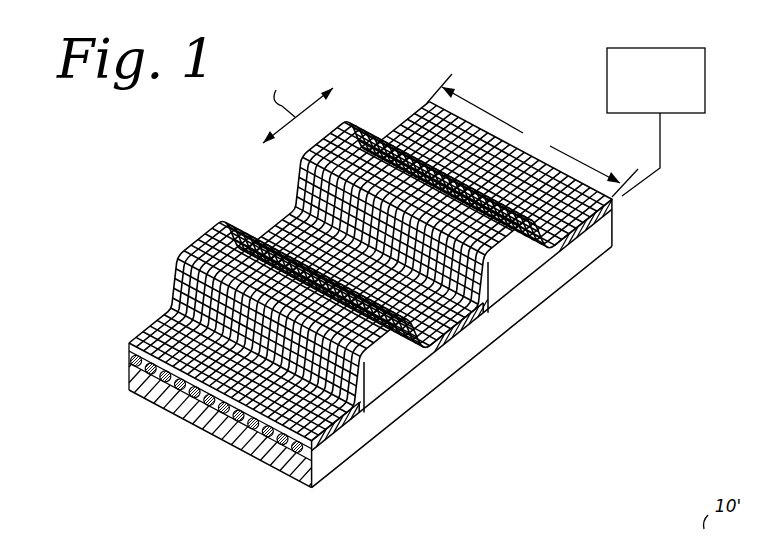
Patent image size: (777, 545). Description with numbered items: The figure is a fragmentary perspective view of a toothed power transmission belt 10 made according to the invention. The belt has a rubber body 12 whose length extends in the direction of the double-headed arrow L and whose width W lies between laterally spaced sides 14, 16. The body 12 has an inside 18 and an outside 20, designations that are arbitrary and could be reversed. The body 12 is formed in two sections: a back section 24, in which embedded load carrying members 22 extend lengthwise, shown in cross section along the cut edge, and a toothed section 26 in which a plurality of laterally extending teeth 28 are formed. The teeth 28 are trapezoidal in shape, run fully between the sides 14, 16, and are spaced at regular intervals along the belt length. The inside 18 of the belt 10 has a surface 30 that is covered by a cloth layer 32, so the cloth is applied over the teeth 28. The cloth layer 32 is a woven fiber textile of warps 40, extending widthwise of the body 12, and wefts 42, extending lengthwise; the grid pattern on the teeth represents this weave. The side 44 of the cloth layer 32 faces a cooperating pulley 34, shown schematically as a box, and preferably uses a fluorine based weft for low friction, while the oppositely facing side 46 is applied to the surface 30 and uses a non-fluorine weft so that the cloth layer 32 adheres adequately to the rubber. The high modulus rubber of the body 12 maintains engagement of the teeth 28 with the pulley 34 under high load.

The toothed power transmission belt 10 is at (548, 66).
The body 12 is at (618, 226).
The side 14 is at (350, 418).
The side 16 is at (128, 373).
The inside 18 is at (490, 232).
The outside 20 is at (522, 322).
The load carrying member 22 is at (280, 434).
The back section 24 is at (330, 472).
The toothed section 26 is at (539, 251).
The teeth 28 is at (415, 347).
The surface 30 is at (285, 228).
The cloth layer 32 is at (157, 309).
The pulley 34 is at (646, 105).
The warps 40 is at (224, 222).
The wefts 42 is at (192, 234).
The side of the cloth layer 44 is at (363, 155).
The oppositely facing side of the cloth layer 46 is at (384, 338).